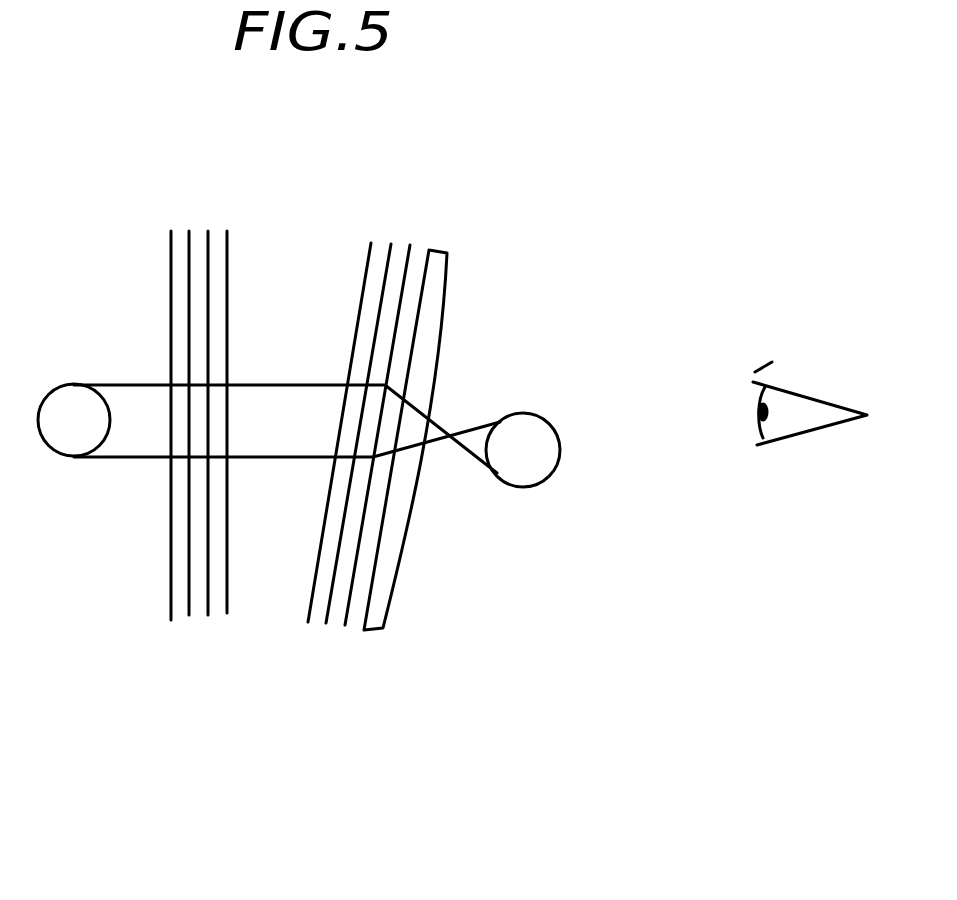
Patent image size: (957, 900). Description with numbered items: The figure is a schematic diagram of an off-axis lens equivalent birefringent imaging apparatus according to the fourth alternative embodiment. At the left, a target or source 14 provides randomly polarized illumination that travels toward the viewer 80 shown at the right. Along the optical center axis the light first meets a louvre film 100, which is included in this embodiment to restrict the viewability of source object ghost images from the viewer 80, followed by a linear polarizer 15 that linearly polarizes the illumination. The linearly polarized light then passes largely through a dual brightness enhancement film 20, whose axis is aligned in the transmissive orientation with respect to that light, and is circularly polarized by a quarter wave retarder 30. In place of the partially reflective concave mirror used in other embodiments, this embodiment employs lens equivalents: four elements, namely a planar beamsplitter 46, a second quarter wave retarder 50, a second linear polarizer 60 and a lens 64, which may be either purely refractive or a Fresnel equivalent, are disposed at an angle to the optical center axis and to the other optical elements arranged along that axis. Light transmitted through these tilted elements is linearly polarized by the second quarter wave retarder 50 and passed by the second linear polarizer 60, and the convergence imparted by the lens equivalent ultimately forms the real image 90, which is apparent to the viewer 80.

The source 14 is at (77, 408).
The louvre film 100 is at (172, 590).
The linear polarizer 15 is at (189, 615).
The dual brightness enhancement film 20 is at (208, 615).
The quarter wave retarder 30 is at (227, 613).
The planar beamsplitter 46 is at (308, 615).
The second quarter wave retarder 50 is at (326, 620).
The second linear polarizer 60 is at (345, 620).
The lens 64 is at (385, 628).
The real image 90 is at (532, 437).
The viewer 80 is at (810, 408).